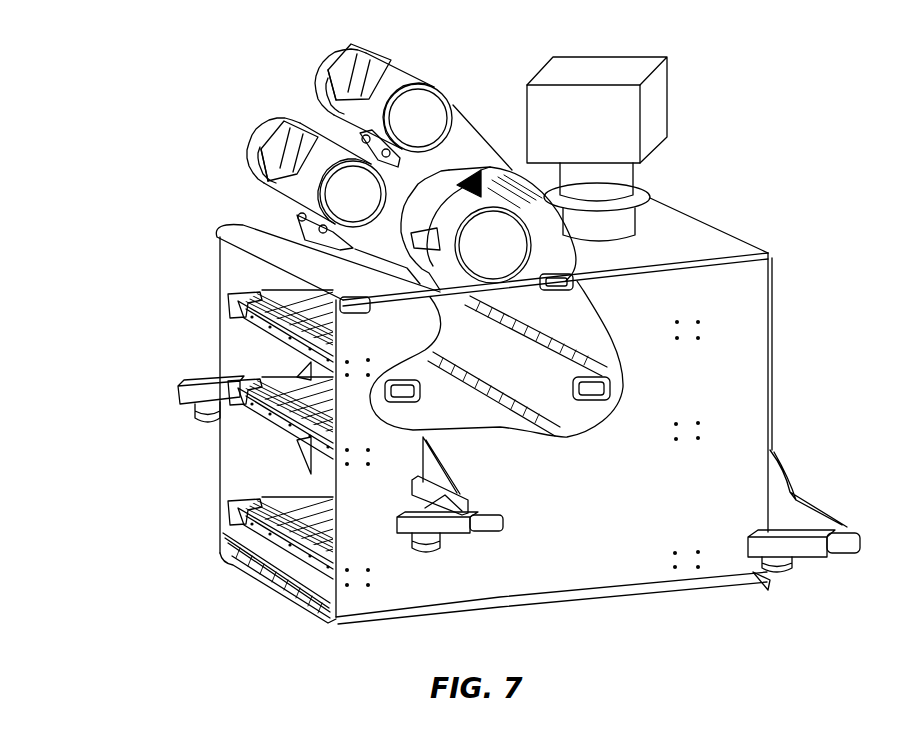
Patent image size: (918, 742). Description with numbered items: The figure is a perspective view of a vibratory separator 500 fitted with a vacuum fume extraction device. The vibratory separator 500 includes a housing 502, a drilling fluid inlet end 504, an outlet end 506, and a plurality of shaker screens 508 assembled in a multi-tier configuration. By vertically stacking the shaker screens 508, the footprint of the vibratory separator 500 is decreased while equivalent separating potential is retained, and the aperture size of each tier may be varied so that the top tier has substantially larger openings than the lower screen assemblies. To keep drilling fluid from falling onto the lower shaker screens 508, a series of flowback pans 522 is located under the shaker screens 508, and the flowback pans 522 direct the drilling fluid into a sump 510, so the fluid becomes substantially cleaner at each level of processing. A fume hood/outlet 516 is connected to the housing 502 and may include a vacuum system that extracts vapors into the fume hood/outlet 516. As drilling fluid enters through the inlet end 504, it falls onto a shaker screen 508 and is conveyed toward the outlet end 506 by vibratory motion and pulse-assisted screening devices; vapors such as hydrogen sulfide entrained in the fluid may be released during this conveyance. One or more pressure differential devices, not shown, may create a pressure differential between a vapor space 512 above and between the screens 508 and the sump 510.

The vibratory separator 500 is at (260, 76).
The housing 502 is at (730, 390).
The drilling fluid inlet end 504 is at (775, 342).
The outlet end 506 is at (132, 414).
The shaker screens 508 is at (290, 364).
The sump 510 is at (278, 599).
The vapor space 512 is at (233, 262).
The fume hood/outlet 516 is at (667, 97).
The flowback pans 522 is at (248, 426).